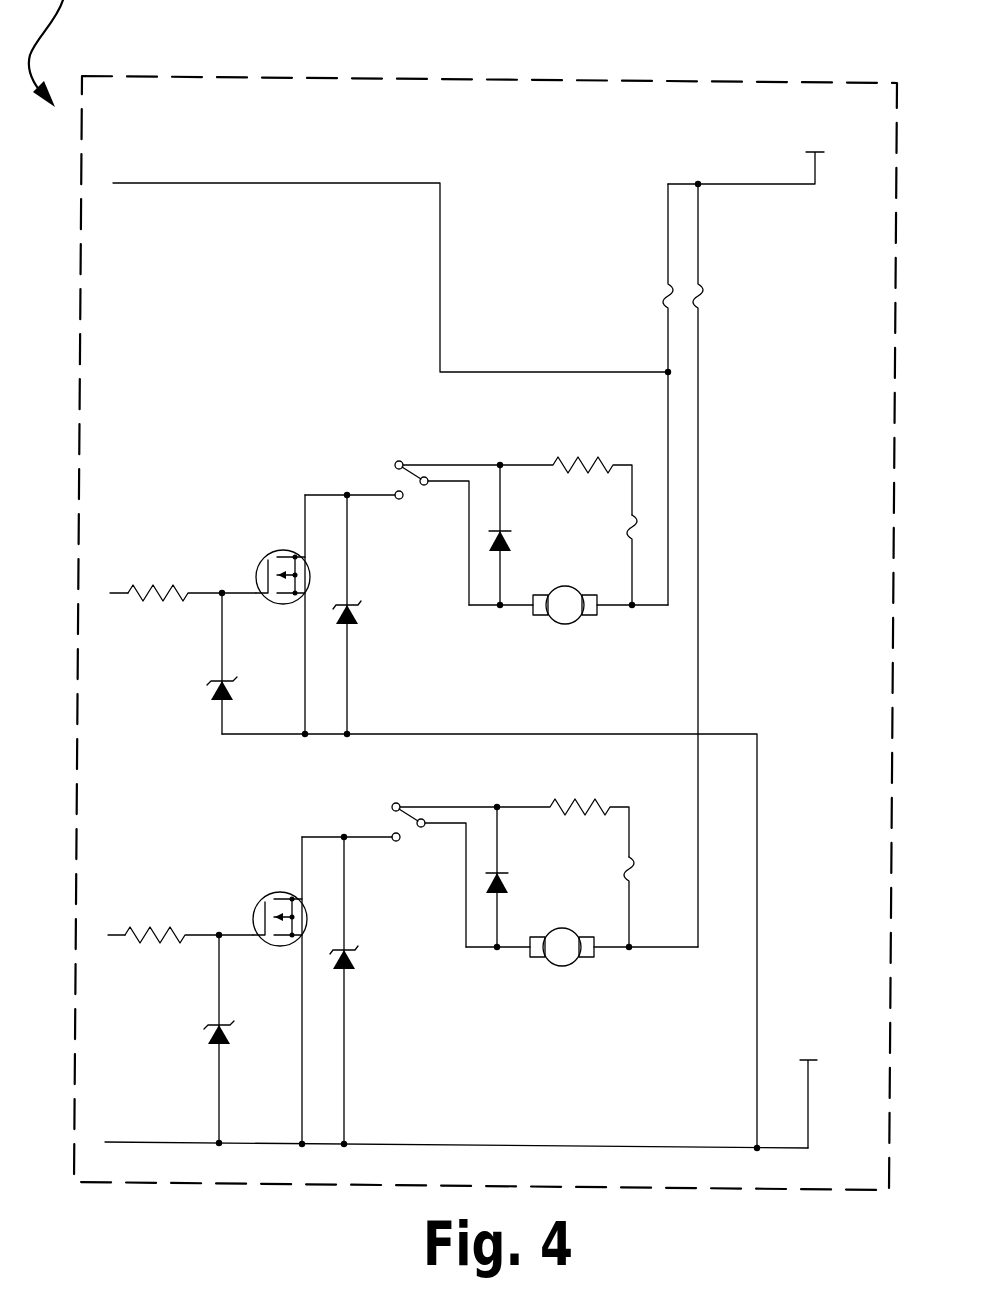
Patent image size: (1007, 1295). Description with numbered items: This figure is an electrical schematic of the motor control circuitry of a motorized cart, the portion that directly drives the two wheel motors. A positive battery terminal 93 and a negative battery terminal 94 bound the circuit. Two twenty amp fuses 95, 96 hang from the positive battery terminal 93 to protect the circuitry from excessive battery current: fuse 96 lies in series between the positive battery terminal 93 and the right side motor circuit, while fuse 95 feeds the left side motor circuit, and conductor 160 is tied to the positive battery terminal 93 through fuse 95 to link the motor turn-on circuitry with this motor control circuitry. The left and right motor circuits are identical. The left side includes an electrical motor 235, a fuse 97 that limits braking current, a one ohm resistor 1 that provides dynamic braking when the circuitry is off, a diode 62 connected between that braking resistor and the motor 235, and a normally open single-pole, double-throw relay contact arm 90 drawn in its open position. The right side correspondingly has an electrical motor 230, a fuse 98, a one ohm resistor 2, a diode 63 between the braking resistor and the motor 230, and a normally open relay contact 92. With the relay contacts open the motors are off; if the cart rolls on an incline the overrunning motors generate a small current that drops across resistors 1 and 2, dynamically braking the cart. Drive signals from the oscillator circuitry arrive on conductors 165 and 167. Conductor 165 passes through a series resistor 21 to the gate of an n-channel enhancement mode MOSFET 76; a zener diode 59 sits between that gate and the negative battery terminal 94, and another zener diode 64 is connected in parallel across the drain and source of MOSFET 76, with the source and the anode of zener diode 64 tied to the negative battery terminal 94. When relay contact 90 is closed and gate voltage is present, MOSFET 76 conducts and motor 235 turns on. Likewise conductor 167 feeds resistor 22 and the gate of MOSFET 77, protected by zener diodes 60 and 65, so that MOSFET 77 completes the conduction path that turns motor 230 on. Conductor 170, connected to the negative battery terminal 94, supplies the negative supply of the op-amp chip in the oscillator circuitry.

The conductor 160 is at (193, 183).
The positive battery terminal 93 is at (812, 155).
The fuse 95 is at (661, 300).
The fuse 96 is at (704, 300).
The conductor 165 is at (113, 593).
The resistor 21 is at (175, 600).
The n-channel enhancement mode MOSFET 76 is at (292, 551).
The zener diode 59 is at (215, 700).
The zener diode 64 is at (362, 626).
The relay contact arm 90 is at (412, 482).
The diode 62 is at (492, 538).
The one ohm resistor 1 is at (566, 474).
The fuse 97 is at (628, 538).
The electrical motor 235 is at (563, 624).
The conductor 167 is at (126, 878).
The resistor 22 is at (185, 950).
The n-channel enhancement mode MOSFET 77 is at (280, 990).
The zener diode 60 is at (193, 1039).
The zener diode 65 is at (373, 989).
The relay contact 92 is at (399, 862).
The diode 63 is at (499, 877).
The one ohm resistor 2 is at (563, 818).
The fuse 98 is at (683, 902).
The electrical motor 230 is at (582, 963).
The conductor 170 is at (108, 1142).
The negative battery terminal 94 is at (806, 1065).